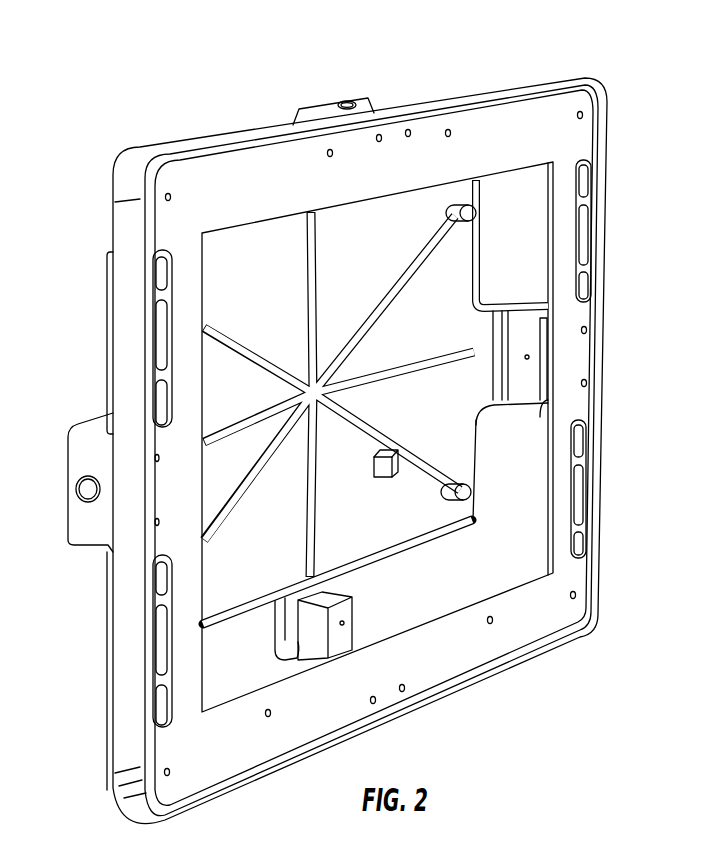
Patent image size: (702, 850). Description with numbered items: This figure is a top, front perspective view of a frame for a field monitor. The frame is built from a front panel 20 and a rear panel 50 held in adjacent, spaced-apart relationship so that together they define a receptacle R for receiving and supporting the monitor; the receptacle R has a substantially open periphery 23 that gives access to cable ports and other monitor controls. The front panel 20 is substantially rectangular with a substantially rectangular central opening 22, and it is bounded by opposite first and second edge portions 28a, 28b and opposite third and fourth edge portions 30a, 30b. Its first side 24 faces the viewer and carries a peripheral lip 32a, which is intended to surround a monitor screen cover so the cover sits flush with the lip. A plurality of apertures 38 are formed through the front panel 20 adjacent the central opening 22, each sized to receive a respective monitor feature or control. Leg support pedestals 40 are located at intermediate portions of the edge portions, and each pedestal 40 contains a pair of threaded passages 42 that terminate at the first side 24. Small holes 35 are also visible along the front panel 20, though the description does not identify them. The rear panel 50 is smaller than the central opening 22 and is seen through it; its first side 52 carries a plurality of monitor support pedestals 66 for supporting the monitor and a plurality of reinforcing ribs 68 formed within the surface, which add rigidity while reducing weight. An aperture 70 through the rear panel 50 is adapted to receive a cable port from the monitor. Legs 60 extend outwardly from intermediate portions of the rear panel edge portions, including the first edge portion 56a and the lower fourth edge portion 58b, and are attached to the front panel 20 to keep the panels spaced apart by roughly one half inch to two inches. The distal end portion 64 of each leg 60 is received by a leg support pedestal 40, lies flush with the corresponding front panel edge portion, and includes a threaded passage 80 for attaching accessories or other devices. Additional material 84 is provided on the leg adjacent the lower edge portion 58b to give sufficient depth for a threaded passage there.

The front panel 20 is at (562, 78).
The central opening 22 is at (226, 244).
The open periphery 23 is at (498, 556).
The first side 24 is at (498, 137).
The first edge portion 28a is at (601, 330).
The second edge portion 28b is at (127, 690).
The third edge portion 30a is at (455, 93).
The fourth edge portion 30b is at (312, 757).
The peripheral lip 32a is at (600, 124).
The fastener holes 35 is at (172, 197).
The apertures 38 is at (585, 225).
The leg support pedestal 40 is at (563, 405).
The threaded passages 42 is at (408, 136).
The rear panel 50 is at (481, 242).
The first side 52 is at (366, 245).
The first edge portion 56a is at (478, 448).
The fourth edge portion 58b is at (393, 555).
The legs 60 is at (371, 107).
The distal end portion 64 is at (327, 105).
The monitor support pedestals 66 is at (471, 213).
The reinforcing ribs 68 is at (308, 318).
The aperture 70 is at (378, 470).
The threaded passage 80 is at (344, 102).
The additional material 84 is at (350, 612).
The receptacle R is at (258, 262).